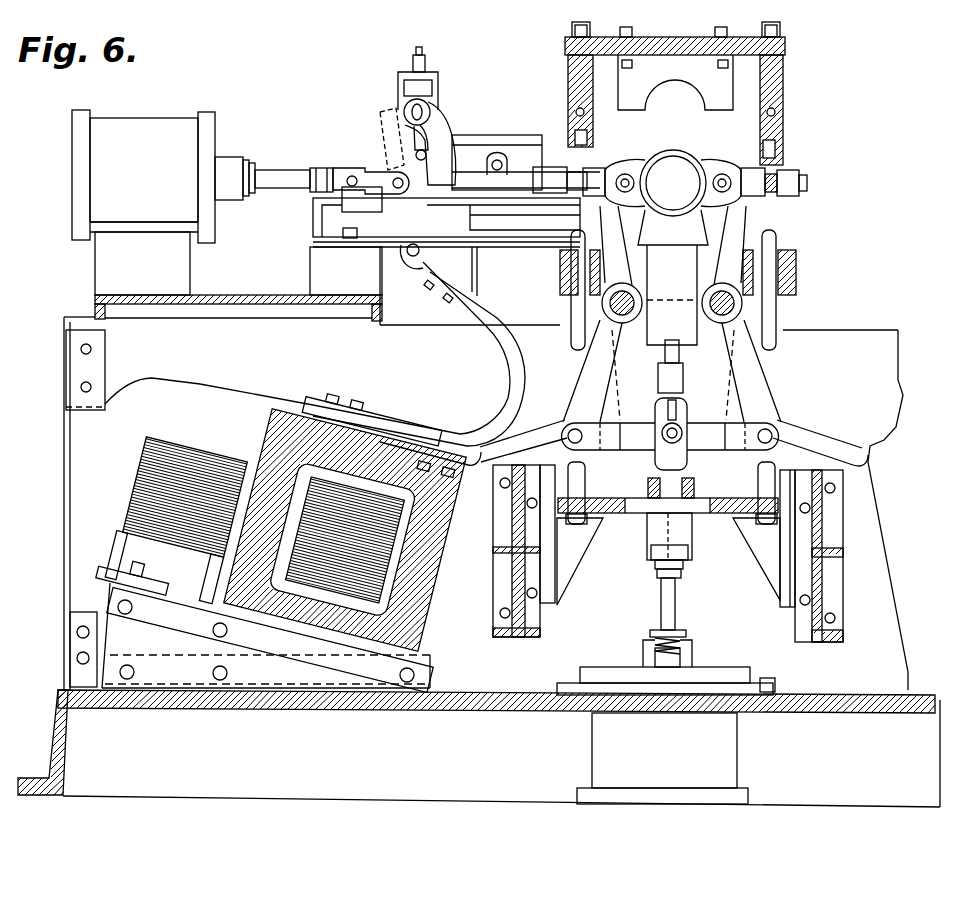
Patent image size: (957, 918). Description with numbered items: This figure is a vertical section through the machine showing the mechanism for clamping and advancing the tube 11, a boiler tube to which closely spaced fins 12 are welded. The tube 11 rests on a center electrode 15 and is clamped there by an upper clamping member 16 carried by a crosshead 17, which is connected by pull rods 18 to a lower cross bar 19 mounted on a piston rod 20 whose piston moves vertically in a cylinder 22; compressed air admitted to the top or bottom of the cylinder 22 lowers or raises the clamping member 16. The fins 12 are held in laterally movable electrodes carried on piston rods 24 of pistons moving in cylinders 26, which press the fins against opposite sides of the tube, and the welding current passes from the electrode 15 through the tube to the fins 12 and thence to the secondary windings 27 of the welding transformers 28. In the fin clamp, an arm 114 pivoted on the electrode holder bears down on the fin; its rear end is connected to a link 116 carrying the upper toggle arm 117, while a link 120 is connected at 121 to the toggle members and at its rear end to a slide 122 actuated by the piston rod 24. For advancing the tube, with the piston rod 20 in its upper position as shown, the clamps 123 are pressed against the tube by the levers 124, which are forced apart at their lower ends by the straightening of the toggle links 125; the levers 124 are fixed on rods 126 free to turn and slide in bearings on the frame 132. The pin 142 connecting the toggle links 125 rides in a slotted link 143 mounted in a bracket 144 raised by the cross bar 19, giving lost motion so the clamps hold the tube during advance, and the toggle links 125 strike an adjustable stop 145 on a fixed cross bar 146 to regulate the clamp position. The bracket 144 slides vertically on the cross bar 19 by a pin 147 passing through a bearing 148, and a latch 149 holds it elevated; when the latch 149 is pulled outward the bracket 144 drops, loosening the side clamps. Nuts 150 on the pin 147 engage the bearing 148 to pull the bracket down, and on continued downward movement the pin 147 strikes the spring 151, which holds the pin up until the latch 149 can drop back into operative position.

The tube 11 is at (672, 150).
The fins 12 is at (426, 262).
The center electrode 15 is at (673, 227).
The clamping member 16 is at (675, 75).
The crosshead 17 is at (565, 45).
The pull rods 18 is at (577, 350).
The lower cross bar 19 is at (723, 513).
The piston rod 20 is at (664, 598).
The cylinder 22 is at (605, 738).
The piston rods 24 is at (275, 170).
The cylinders 26 is at (127, 130).
The secondary windings 27 is at (268, 426).
The welding transformers 28 is at (170, 455).
The arm 114 is at (489, 143).
The link 116 is at (440, 100).
The toggle arm 117 is at (384, 133).
The link 120 is at (380, 185).
The connection 121 is at (400, 192).
The slide 122 is at (348, 200).
The clamps 123 is at (648, 158).
The levers 124 is at (582, 390).
The toggle links 125 is at (615, 450).
The rods 126 is at (600, 305).
The frame 132 is at (848, 343).
The pin 142 is at (608, 436).
The slotted link 143 is at (686, 416).
The bracket 144 is at (732, 436).
The adjustable stop 145 is at (662, 418).
The fixed cross bar 146 is at (670, 366).
The pin 147 is at (652, 556).
The bearing 148 is at (647, 535).
The latch 149 is at (650, 490).
The nuts 150 is at (684, 565).
The spring 151 is at (693, 650).